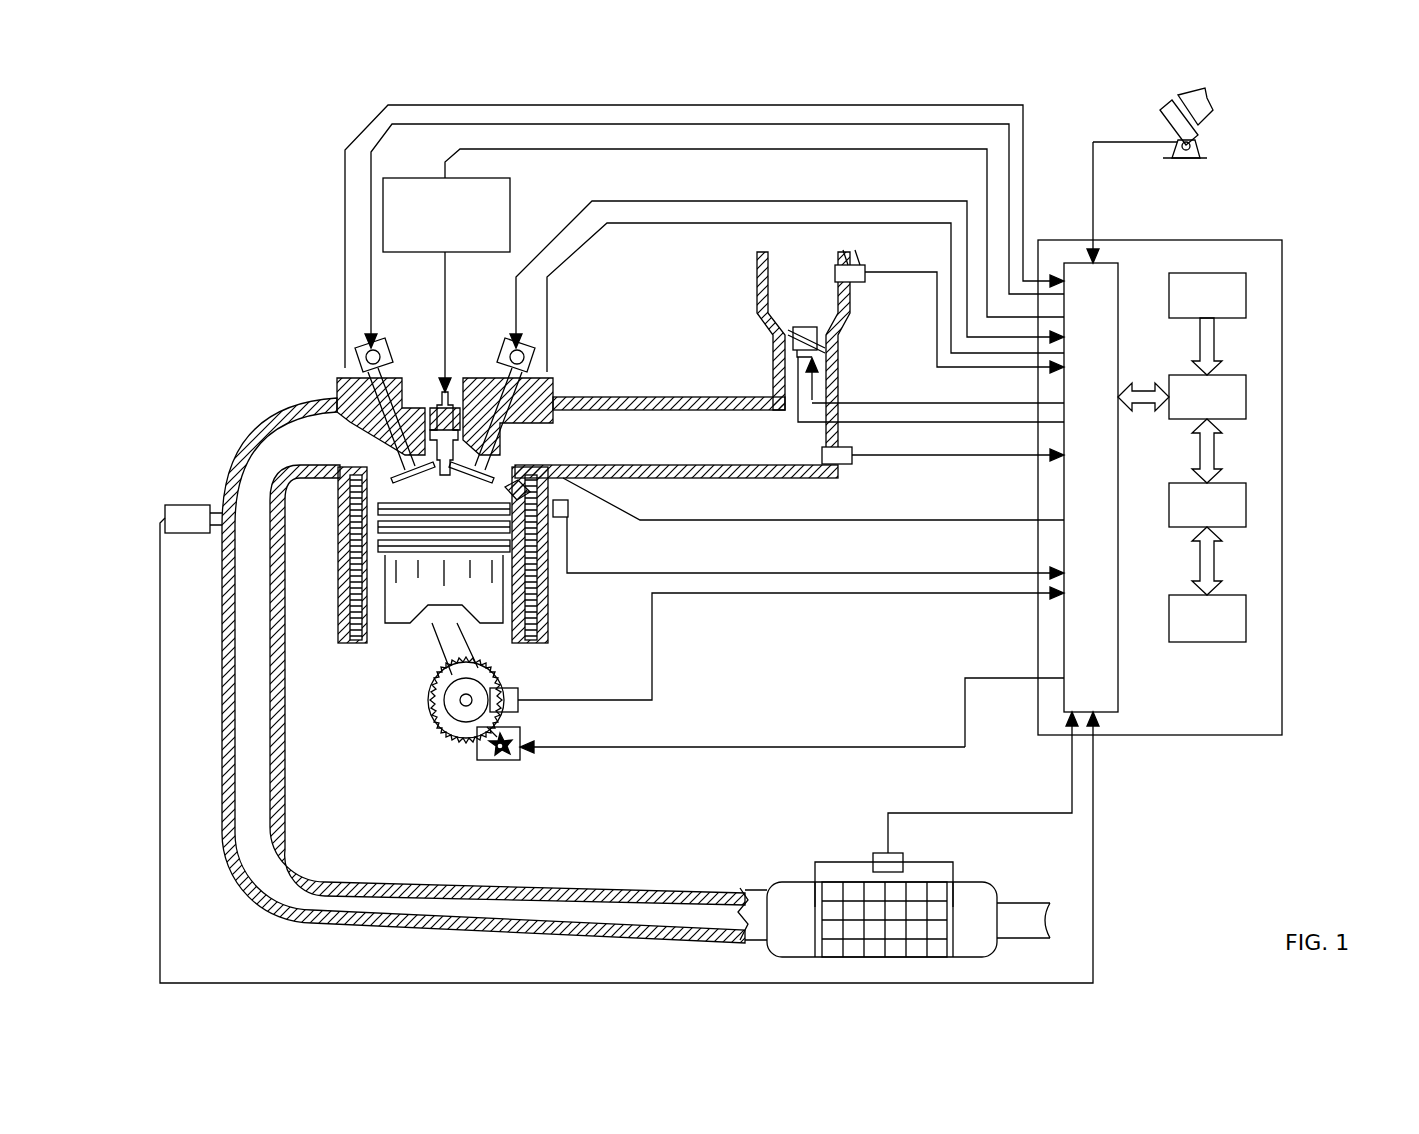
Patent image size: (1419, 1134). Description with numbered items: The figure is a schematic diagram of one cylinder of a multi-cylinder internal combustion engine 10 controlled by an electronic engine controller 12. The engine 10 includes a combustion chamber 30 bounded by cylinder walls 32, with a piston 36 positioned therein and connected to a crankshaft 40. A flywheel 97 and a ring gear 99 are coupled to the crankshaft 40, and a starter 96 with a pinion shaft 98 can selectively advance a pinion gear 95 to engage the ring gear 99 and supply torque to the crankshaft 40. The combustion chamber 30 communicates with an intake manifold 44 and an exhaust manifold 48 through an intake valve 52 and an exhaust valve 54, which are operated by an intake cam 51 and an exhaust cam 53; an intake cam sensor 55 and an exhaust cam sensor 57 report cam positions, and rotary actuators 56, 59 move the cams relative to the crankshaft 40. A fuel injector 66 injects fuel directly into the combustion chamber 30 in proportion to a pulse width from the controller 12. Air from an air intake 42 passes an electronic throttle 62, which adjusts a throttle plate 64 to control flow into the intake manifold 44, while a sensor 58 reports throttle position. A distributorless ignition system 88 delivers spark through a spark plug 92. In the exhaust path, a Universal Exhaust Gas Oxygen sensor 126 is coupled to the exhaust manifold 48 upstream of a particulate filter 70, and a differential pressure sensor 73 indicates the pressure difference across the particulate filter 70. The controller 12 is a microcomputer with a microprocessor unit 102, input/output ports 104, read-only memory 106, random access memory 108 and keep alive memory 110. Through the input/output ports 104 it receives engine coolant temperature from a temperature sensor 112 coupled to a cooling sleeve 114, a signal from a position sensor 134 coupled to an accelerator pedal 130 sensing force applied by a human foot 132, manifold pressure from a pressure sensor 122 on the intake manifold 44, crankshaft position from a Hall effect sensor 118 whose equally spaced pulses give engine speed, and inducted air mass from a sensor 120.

The internal combustion engine 10 is at (205, 293).
The electronic engine controller 12 is at (1268, 240).
The combustion chamber 30 is at (345, 570).
The cylinder walls 32 is at (375, 648).
The piston 36 is at (427, 595).
The crankshaft 40 is at (448, 738).
The air intake 42 is at (803, 350).
The intake manifold 44 is at (676, 437).
The exhaust manifold 48 is at (483, 670).
The intake cam 51 is at (525, 352).
The intake valve 52 is at (513, 450).
The exhaust cam 53 is at (362, 348).
The exhaust valve 54 is at (345, 425).
The intake cam sensor 55 is at (523, 372).
The rotary actuator 56 is at (555, 380).
The exhaust cam sensor 57 is at (357, 365).
The throttle position sensor 58 is at (775, 362).
The rotary actuator 59 is at (345, 372).
The electronic throttle 62 is at (820, 333).
The throttle plate 64 is at (793, 338).
The fuel injector 66 is at (545, 484).
The particulate filter 70 is at (820, 925).
The differential pressure sensor 73 is at (883, 857).
The distributorless ignition system 88 is at (400, 178).
The spark plug 92 is at (447, 393).
The pinion gear 95 is at (505, 757).
The starter 96 is at (518, 758).
The flywheel 97 is at (438, 712).
The pinion shaft 98 is at (495, 755).
The ring gear 99 is at (460, 742).
The microprocessor unit 102 is at (1246, 392).
The input/output ports 104 is at (1120, 273).
The read-only memory 106 is at (1246, 292).
The random access memory 108 is at (1246, 501).
The keep alive memory 110 is at (1246, 613).
The temperature sensor 112 is at (568, 518).
The cooling sleeve 114 is at (550, 597).
The Hall effect sensor 118 is at (515, 688).
The air mass sensor 120 is at (860, 262).
The pressure sensor 122 is at (845, 464).
The Universal Exhaust Gas Oxygen sensor 126 is at (165, 508).
The accelerator pedal 130 is at (1163, 118).
The human foot 132 is at (1217, 103).
The position sensor 134 is at (1212, 142).